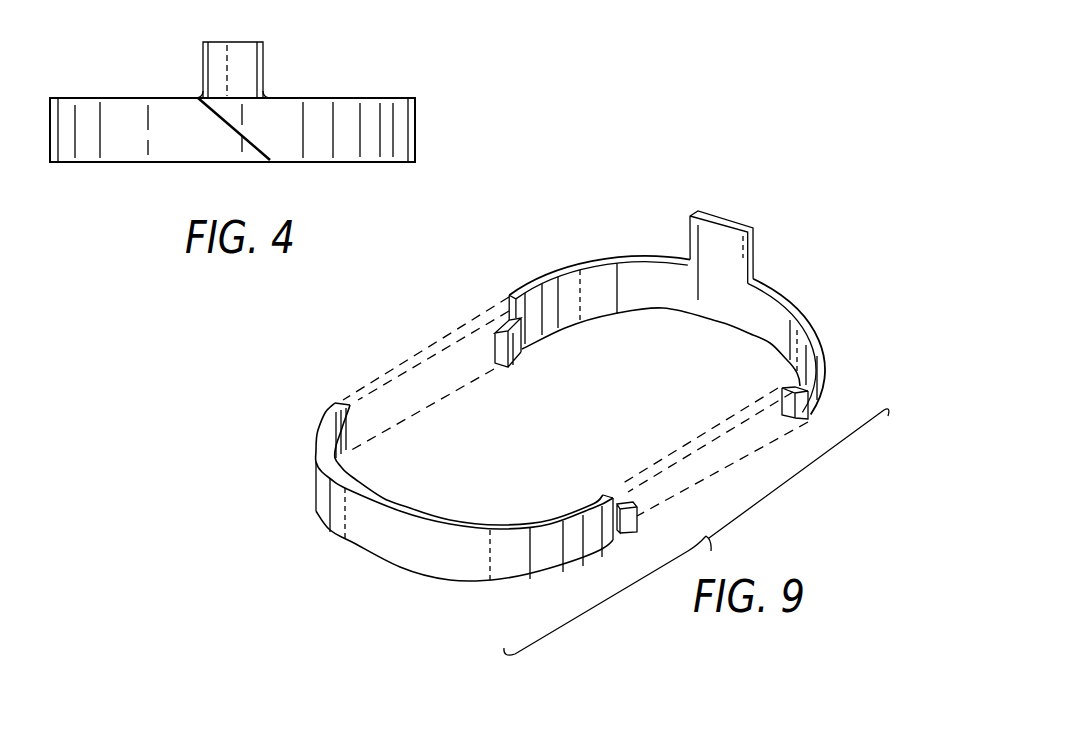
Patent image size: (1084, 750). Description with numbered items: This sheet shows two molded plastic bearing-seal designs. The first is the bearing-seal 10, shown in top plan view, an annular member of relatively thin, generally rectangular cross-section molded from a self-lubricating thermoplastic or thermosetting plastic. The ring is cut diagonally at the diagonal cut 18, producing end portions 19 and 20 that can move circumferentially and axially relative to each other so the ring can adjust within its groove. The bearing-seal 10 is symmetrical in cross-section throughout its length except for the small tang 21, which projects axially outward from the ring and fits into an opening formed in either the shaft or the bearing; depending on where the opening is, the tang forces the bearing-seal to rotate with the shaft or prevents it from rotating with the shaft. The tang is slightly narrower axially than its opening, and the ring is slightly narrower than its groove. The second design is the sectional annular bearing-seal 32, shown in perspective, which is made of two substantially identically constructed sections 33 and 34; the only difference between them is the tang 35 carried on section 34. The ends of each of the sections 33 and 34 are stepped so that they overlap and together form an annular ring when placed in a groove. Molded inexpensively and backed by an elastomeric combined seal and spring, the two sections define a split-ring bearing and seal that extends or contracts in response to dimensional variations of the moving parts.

In FIG. 4, the bearing-seal 10 is at (371, 98).
In FIG. 4, the diagonal cut 18 is at (247, 137).
In FIG. 4, the end portion 19 is at (228, 146).
In FIG. 4, the end portion 20 is at (283, 143).
In FIG. 4, the tang 21 is at (256, 49).
In FIG. 9, the sectional annular bearing-seal 32 is at (529, 289).
In FIG. 9, the section 33 is at (403, 514).
In FIG. 9, the section 34 is at (665, 310).
In FIG. 9, the tang 35 is at (748, 226).